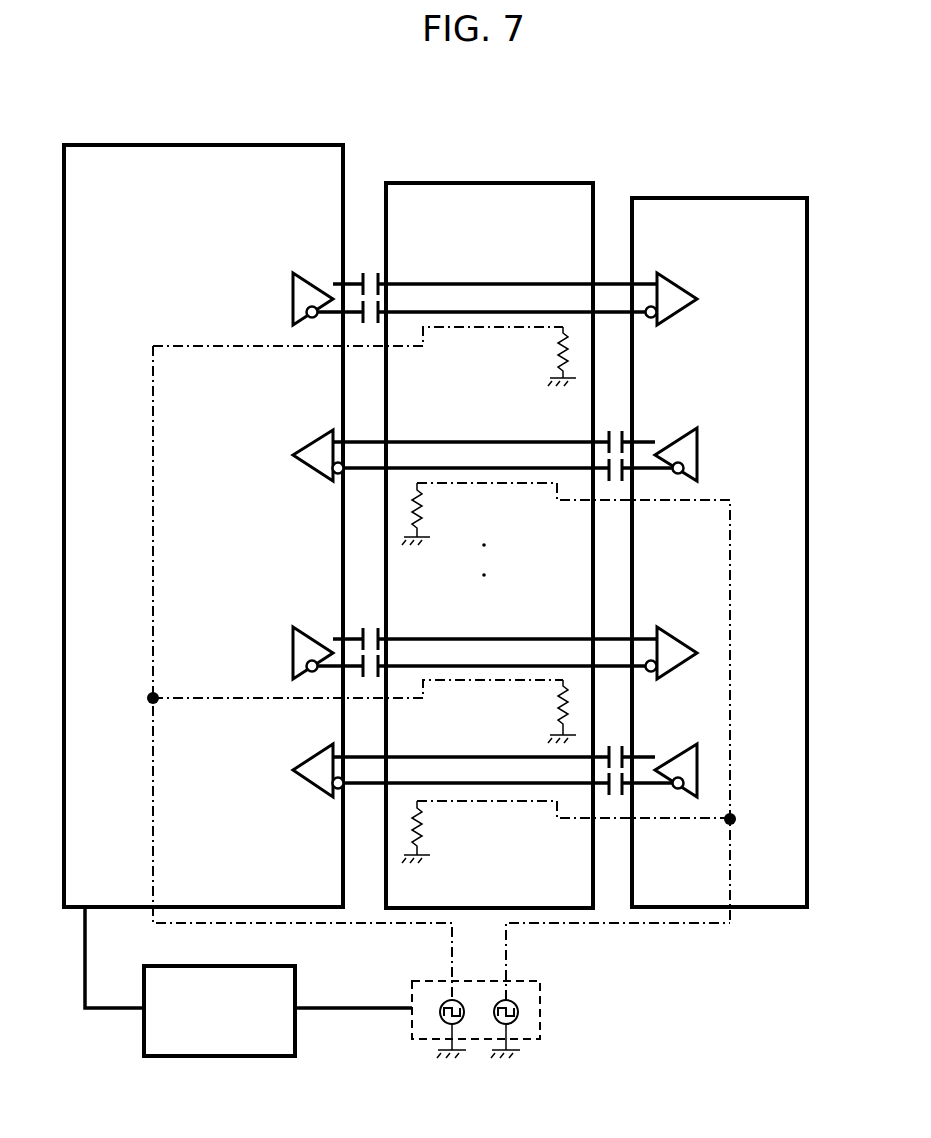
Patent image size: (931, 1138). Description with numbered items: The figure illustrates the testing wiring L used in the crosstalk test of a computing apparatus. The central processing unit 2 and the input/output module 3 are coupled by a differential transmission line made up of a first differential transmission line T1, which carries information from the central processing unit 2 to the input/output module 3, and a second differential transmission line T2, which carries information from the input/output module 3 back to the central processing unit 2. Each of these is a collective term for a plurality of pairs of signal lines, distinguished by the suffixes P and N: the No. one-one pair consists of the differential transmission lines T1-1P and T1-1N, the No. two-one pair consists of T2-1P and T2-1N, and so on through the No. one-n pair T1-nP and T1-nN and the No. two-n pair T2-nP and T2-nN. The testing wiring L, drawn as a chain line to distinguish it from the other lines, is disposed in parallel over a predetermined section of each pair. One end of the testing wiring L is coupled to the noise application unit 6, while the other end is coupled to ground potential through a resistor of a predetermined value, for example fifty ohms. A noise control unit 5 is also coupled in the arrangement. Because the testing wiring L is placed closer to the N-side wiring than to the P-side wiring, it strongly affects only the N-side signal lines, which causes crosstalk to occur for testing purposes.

The central processing unit 2 is at (213, 145).
The input/output module 3 is at (728, 198).
The noise control unit 5 is at (297, 993).
The noise application unit 6 is at (527, 981).
The testing wiring L is at (236, 350).
The first differential transmission line T1 is at (489, 523).
The second differential transmission line T2 is at (525, 160).
The differential transmission line T1-1P is at (491, 284).
The differential transmission line T1-1N is at (482, 316).
The differential transmission line T2-1P is at (491, 442).
The differential transmission line T2-1N is at (482, 470).
The differential transmission line T1-nP is at (433, 639).
The differential transmission line T1-nN is at (428, 678).
The differential transmission line T2-nP is at (515, 740).
The differential transmission line T2-nN is at (482, 786).